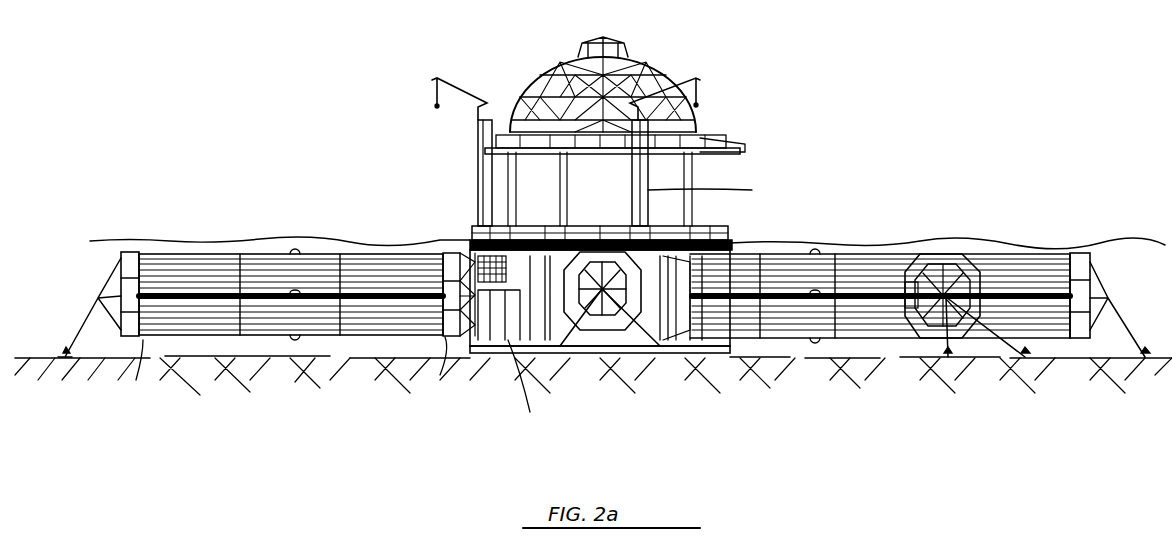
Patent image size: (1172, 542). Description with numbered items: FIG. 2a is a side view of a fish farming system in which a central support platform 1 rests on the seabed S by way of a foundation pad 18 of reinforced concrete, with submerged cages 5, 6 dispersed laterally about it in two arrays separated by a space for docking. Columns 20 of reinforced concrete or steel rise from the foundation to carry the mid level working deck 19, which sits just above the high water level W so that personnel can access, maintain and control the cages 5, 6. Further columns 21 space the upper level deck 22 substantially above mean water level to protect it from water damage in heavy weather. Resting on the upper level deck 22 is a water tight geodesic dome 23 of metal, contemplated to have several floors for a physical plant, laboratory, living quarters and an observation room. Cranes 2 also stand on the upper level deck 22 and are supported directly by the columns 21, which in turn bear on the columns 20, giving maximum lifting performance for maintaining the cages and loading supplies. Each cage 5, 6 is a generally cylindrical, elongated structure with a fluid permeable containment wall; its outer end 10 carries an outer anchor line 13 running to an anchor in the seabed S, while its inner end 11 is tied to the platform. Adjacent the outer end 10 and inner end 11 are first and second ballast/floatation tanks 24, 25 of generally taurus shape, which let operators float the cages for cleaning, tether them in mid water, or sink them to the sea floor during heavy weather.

The central support platform 1 is at (707, 183).
The cranes 2 is at (460, 103).
The cage 5 is at (318, 266).
The cage 6 is at (888, 345).
The outer end of cage 10 is at (137, 380).
The inner end of cage 11 is at (440, 375).
The outer anchor line 13 is at (96, 297).
The foundation pad 18 is at (688, 352).
The mid level working deck 19 is at (470, 237).
The columns 20 is at (531, 387).
The columns 21 is at (478, 182).
The upper level deck 22 is at (482, 150).
The geodesic dome 23 is at (528, 92).
The first ballast/floatation tank 24 is at (136, 252).
The second ballast/floatation tank 25 is at (462, 340).
The seabed S is at (362, 445).
The high water level W is at (1098, 247).